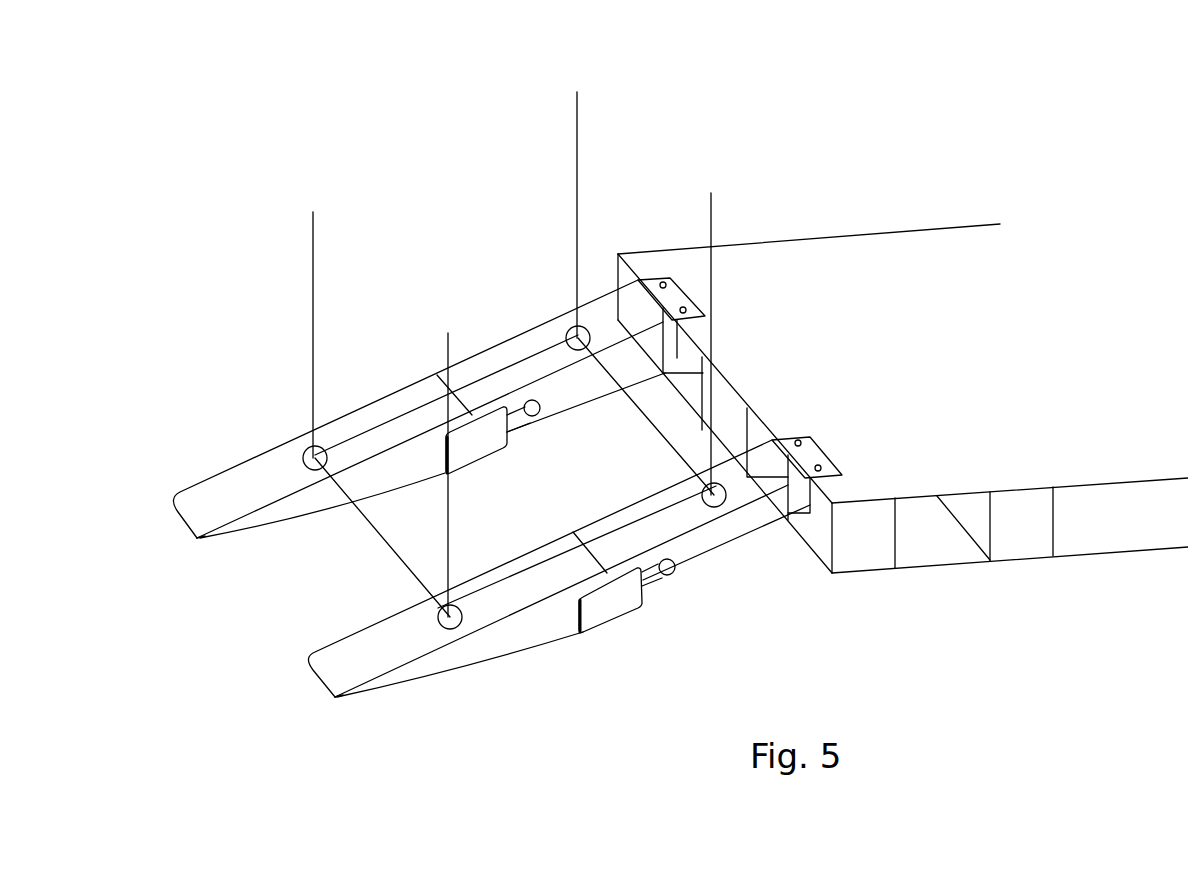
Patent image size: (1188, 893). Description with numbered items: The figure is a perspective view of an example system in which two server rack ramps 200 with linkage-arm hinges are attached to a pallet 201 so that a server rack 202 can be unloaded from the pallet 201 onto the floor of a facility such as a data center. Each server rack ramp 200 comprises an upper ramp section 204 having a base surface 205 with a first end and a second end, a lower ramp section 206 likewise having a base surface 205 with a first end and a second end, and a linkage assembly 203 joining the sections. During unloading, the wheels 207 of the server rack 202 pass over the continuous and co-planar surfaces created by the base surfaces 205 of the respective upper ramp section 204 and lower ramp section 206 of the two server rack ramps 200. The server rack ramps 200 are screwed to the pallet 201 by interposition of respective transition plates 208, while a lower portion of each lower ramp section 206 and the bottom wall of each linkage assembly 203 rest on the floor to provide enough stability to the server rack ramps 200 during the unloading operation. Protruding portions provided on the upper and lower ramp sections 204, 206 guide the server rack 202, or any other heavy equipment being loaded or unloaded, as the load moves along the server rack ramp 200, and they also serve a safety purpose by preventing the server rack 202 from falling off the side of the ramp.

The server rack ramp 200 is at (200, 467).
The pallet 201 is at (900, 247).
The server rack 202 is at (575, 113).
The linkage assembly 203 is at (624, 621).
The upper ramp section 204 is at (660, 587).
The base surface 205 is at (243, 507).
The lower ramp section 206 is at (291, 517).
The wheels 207 is at (306, 451).
The transition plate 208 is at (802, 437).